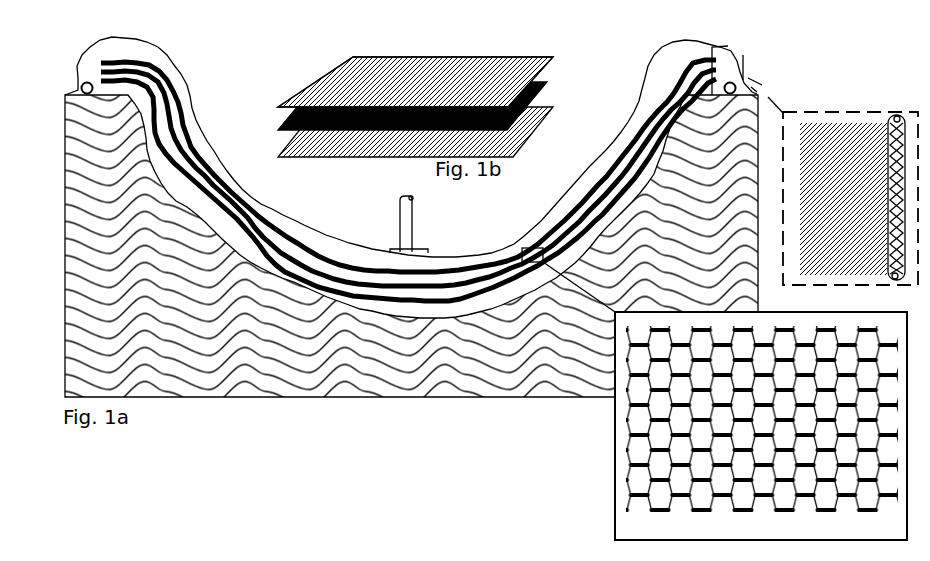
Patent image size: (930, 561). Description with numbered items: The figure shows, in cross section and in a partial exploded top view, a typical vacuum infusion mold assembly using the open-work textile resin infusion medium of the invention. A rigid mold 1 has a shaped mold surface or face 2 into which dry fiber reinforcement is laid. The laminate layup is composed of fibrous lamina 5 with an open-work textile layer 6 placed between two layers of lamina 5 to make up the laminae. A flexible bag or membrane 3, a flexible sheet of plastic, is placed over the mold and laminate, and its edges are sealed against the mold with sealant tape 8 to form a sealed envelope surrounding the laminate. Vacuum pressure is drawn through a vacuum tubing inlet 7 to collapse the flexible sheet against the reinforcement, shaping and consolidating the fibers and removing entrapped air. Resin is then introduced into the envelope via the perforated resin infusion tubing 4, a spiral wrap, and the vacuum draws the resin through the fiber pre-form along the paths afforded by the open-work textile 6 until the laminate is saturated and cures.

In FIG. 1A, the rigid mold 1 is at (80, 198).
In FIG. 1A, the shaped mold surface 2 is at (150, 157).
In FIG. 1A, the flexible bag or membrane 3 is at (64, 89).
In FIG. 1A, the perforated resin infusion tubing 4 is at (81, 85).
In FIG. 1A, the fibrous lamina 5 is at (98, 69).
In FIG. 1B, the fibrous lamina 5 is at (278, 157).
In FIG. 1A, the open-work textile layer 6 is at (713, 70).
In FIG. 1B, the open-work textile layer 6 is at (547, 84).
In FIG. 1A, the vacuum tubing inlet 7 is at (400, 198).
In FIG. 1A, the sealant tape 8 is at (757, 92).